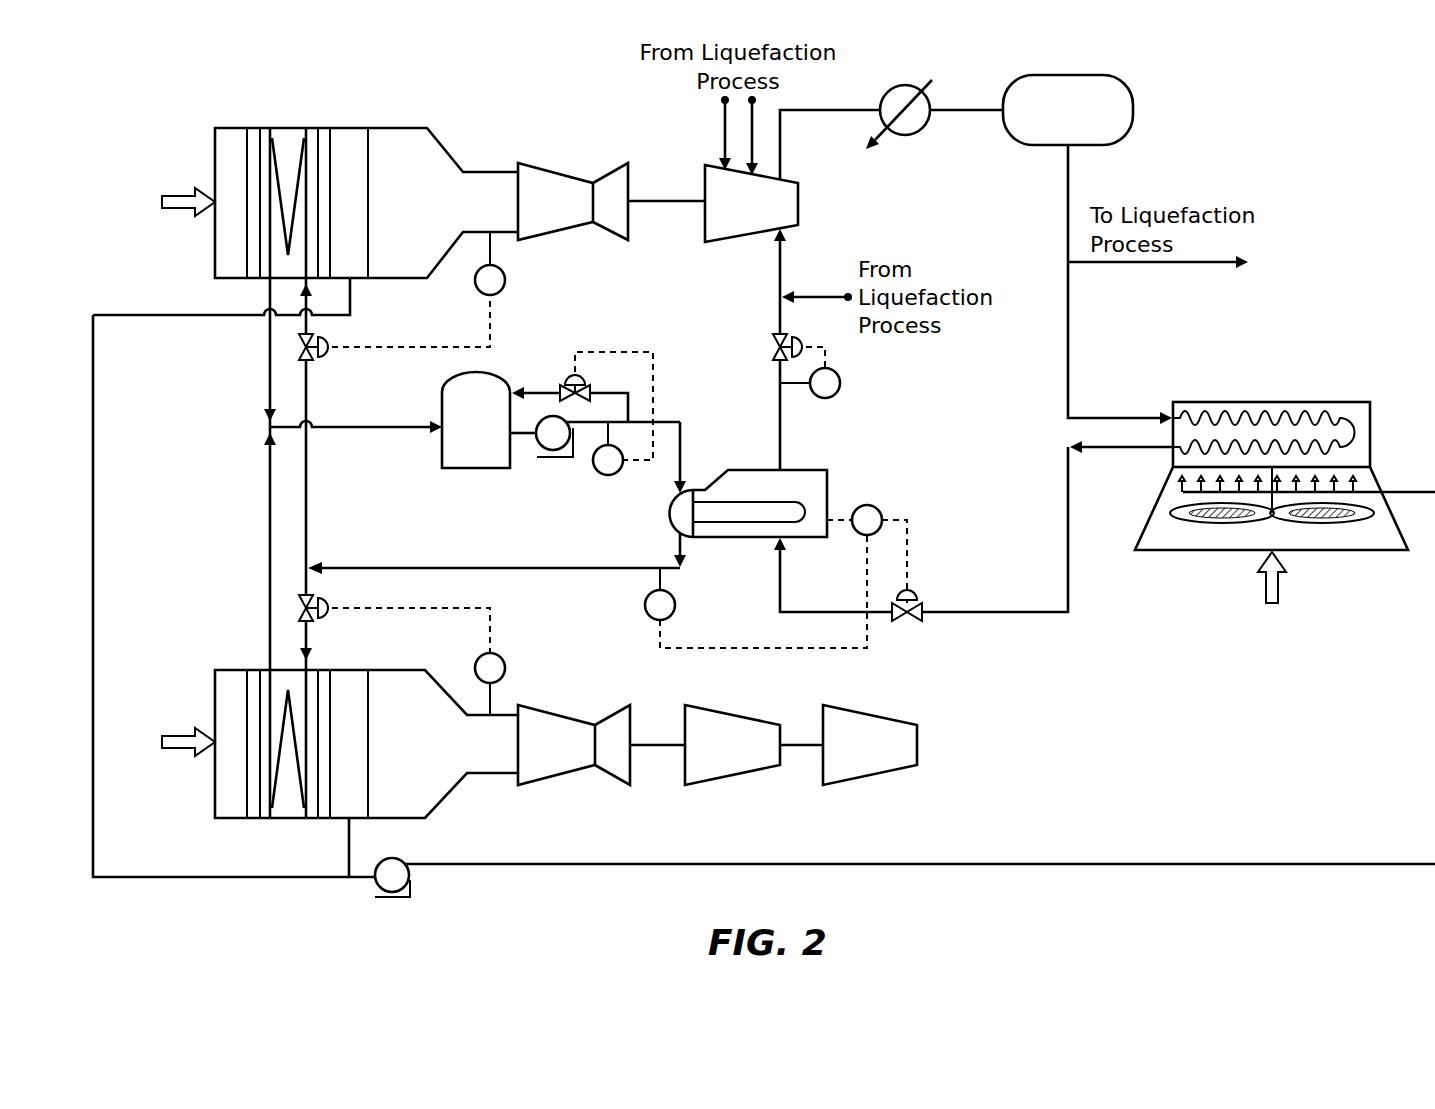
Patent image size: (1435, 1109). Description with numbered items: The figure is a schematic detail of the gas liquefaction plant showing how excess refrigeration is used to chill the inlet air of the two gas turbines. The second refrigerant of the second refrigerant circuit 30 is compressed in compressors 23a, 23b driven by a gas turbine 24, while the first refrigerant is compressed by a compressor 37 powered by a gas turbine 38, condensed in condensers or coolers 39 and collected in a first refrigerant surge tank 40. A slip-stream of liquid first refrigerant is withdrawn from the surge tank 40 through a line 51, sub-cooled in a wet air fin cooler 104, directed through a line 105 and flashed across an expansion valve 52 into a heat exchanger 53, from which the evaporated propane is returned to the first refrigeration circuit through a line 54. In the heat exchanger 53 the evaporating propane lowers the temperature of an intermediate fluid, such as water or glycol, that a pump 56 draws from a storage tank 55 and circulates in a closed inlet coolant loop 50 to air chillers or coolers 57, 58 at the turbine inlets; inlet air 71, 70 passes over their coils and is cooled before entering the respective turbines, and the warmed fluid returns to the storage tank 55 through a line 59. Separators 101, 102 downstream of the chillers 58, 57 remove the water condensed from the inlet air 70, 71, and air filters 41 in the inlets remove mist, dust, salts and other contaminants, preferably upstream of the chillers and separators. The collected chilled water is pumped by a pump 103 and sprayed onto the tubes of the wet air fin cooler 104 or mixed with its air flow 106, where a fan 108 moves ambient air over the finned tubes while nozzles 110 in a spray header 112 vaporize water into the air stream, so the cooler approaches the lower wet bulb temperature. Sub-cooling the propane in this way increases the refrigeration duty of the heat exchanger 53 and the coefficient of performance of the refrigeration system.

The compressor 23a is at (730, 720).
The compressor 23b is at (866, 722).
The gas turbine 24 is at (555, 722).
The second refrigerant circuit 30 is at (812, 110).
The compressor 37 is at (705, 182).
The gas turbine 38 is at (550, 180).
The condensers or coolers 39 is at (923, 130).
The first refrigerant surge tank 40 is at (1125, 82).
The air filters 41 is at (236, 130).
The inlet coolant loop 50 is at (268, 538).
The line 51 is at (1066, 368).
The expansion valve 52 is at (915, 592).
The heat exchanger 53 is at (813, 487).
The line 54 is at (778, 434).
The storage tank 55 is at (465, 470).
The pump 56 is at (562, 457).
The air chiller or cooler 57 is at (288, 812).
The air chiller or cooler 58 is at (290, 130).
The line 59 is at (350, 425).
The inlet air 70 is at (172, 195).
The inlet air 71 is at (172, 735).
The separator 101 is at (348, 130).
The separator 102 is at (352, 672).
The pump 103 is at (405, 880).
The wet air fin cooler 104 is at (1325, 415).
The line 105 is at (1066, 548).
The air flow 106 is at (1265, 590).
The fan 108 is at (1353, 522).
The nozzles 110 is at (1355, 492).
The spray header 112 is at (1190, 507).